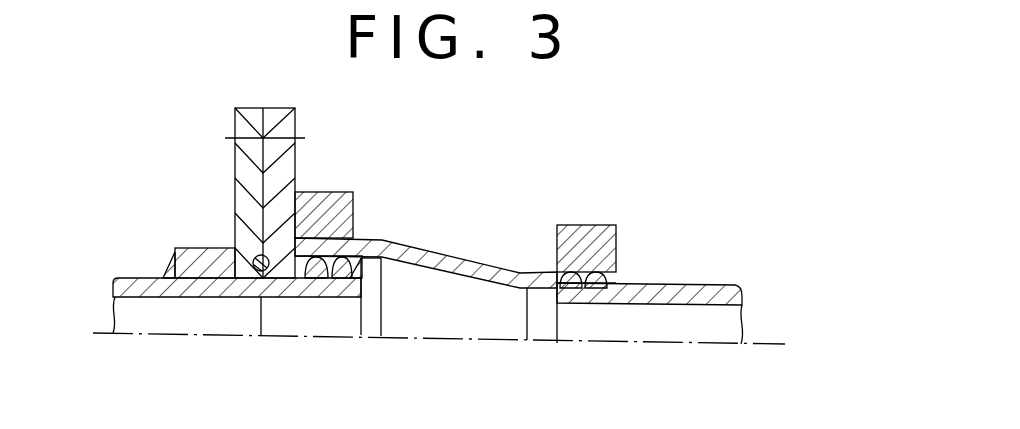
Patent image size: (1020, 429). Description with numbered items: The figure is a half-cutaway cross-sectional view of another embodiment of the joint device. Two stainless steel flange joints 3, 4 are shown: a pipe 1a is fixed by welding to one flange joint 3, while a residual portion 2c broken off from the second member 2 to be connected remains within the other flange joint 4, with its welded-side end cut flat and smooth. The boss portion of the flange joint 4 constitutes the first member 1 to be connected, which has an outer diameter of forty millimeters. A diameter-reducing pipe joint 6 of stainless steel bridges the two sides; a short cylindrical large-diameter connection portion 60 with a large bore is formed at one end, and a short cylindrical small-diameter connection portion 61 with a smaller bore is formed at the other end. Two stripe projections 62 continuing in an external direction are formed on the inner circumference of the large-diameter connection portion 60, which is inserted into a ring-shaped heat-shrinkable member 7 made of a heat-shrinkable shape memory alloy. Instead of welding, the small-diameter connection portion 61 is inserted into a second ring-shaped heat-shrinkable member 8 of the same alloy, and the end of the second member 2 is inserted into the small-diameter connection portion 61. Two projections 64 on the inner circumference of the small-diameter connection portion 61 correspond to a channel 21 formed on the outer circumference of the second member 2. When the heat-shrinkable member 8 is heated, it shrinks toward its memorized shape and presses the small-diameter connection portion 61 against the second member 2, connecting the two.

The first member to be connected 1 is at (282, 272).
The pipe 1a is at (187, 312).
The second member to be connected 2 is at (713, 283).
The residual portion 2c is at (353, 312).
The flange joint 3 is at (233, 165).
The flange joint 4 is at (297, 122).
The diameter-reducing pipe joint 6 is at (440, 251).
The heat-shrinkable member 7 is at (330, 157).
The heat-shrinkable member 8 is at (574, 225).
The channel 21 is at (615, 279).
The large-diameter connection portion 60 is at (353, 204).
The small-diameter connection portion 61 is at (590, 272).
The stripe projections 62 is at (332, 273).
The projections 64 is at (598, 282).